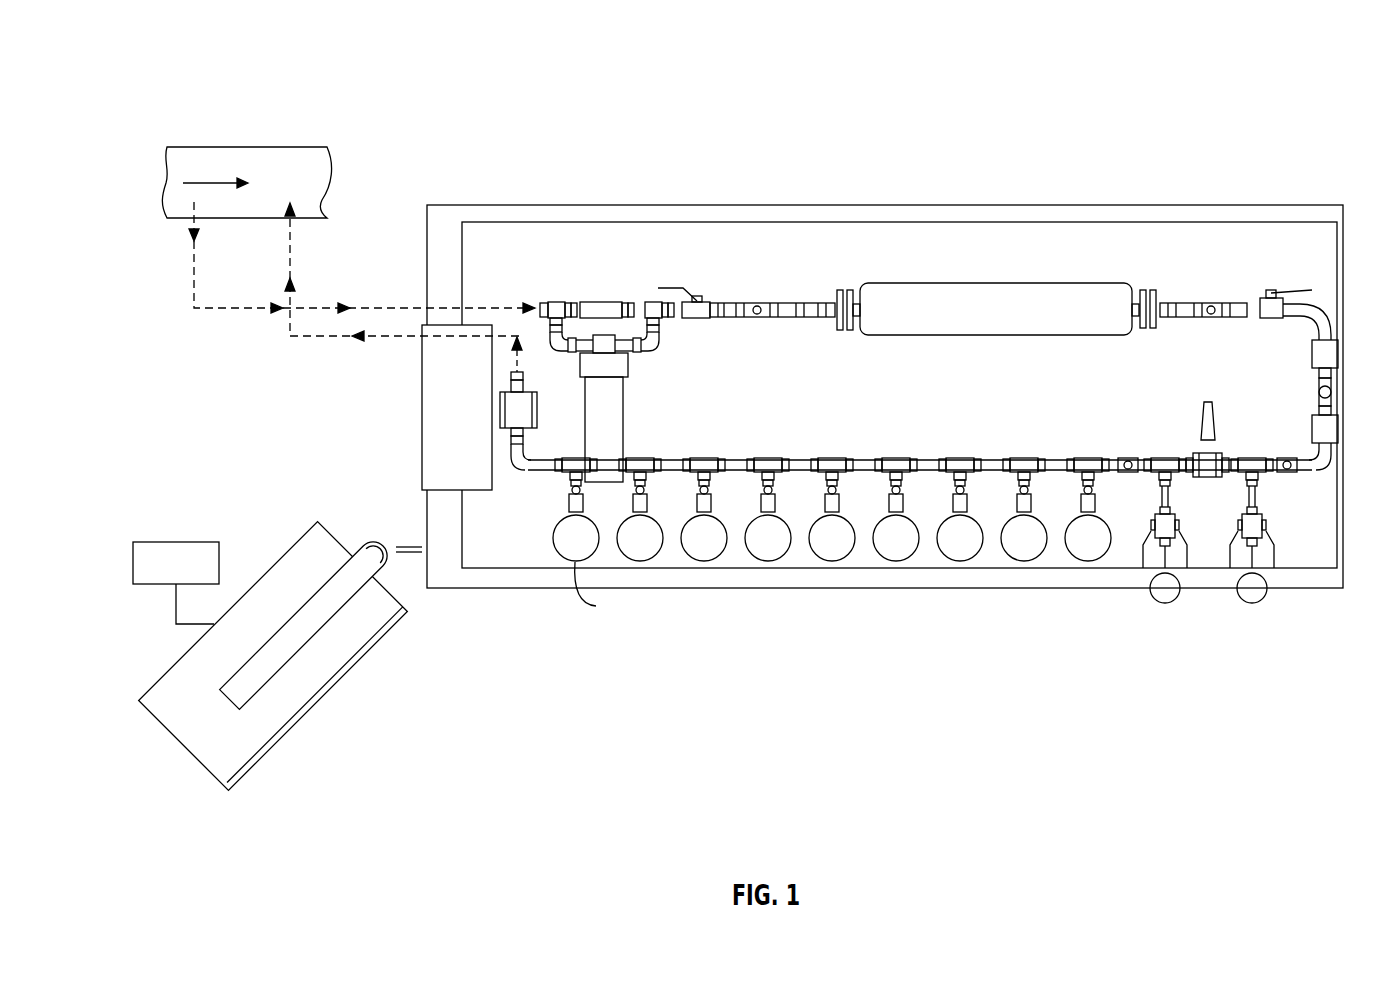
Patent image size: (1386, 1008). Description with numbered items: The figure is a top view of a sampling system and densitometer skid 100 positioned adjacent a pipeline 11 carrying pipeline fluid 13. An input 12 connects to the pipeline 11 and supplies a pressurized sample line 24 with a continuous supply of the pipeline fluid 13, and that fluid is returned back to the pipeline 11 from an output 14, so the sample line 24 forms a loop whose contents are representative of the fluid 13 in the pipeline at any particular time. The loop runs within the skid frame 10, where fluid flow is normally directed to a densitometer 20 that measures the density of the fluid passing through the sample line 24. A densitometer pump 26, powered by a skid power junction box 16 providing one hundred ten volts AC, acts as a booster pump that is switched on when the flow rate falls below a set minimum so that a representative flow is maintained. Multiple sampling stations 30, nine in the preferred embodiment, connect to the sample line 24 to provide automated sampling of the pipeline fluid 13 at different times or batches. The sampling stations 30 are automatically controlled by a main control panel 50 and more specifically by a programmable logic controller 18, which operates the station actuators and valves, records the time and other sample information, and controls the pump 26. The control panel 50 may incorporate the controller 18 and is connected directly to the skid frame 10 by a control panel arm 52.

The sampling system and densitometer skid 100 is at (399, 126).
The skid frame 10 is at (950, 205).
The pipeline 11 is at (197, 147).
The input 12 is at (190, 227).
The pipeline fluid 13 is at (214, 180).
The output 14 is at (288, 238).
The skid power junction box 16 is at (420, 470).
The programmable logic controller 18 is at (178, 542).
The densitometer 20 is at (1076, 283).
The pressurized sample line 24 is at (928, 460).
The densitometer pump 26 is at (623, 445).
The sampling stations 30 is at (830, 563).
The main control panel 50 is at (333, 690).
The control panel arm 52 is at (362, 538).